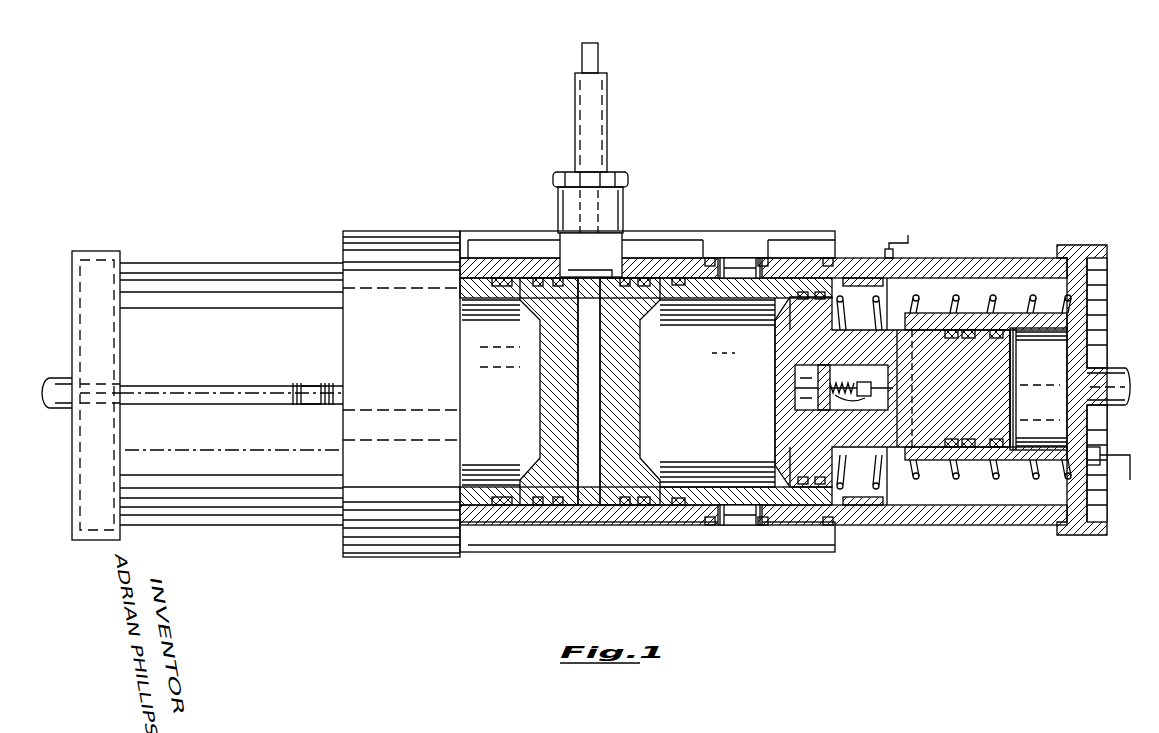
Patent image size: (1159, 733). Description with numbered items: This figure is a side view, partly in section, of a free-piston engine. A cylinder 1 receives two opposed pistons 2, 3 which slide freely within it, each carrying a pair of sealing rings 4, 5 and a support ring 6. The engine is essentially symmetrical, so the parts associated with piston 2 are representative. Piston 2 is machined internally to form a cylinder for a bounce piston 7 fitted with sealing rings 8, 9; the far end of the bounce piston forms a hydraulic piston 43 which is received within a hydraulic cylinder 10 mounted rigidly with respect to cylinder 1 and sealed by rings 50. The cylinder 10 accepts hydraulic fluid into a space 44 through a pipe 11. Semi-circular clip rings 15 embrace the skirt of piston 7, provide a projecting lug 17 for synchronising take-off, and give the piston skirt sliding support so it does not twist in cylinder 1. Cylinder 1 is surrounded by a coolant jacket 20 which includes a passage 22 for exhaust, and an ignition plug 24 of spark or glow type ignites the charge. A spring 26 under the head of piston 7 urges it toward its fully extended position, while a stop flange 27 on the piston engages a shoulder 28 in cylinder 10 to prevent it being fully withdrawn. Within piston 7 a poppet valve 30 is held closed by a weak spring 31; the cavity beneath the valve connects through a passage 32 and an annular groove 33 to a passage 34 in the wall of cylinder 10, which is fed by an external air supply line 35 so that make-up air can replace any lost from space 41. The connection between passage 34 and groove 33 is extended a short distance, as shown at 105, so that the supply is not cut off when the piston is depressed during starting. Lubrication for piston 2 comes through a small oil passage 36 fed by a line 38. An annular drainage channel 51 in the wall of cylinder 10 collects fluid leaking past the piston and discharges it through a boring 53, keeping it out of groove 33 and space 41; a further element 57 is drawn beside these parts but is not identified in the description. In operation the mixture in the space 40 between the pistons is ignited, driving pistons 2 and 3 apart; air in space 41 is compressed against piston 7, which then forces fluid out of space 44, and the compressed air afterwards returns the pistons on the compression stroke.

The cylinder 1 is at (677, 264).
The piston 2 is at (640, 380).
The piston 3 is at (540, 381).
The sealing ring 4 is at (558, 505).
The sealing ring 5 is at (538, 505).
The support ring 6 is at (678, 506).
The bounce piston 7 is at (780, 338).
The sealing ring 8 is at (803, 291).
The sealing ring 9 is at (822, 291).
The hydraulic cylinder 10 is at (1005, 311).
The pipe 11 is at (49, 378).
The semi-circular clip rings 15 is at (324, 386).
The projecting lug 17 is at (309, 405).
The coolant jacket 20 is at (729, 236).
The passage 22 is at (755, 238).
The ignition plug 24 is at (620, 210).
The spring 26 is at (918, 302).
The stop flange 27 is at (1032, 328).
The shoulder 28 is at (1013, 325).
The poppet valve 30 is at (778, 397).
The spring 31 is at (861, 391).
The passage 32 is at (900, 385).
The annular groove 33 is at (918, 388).
The passage 34 is at (1040, 461).
The external air supply line 35 is at (1116, 453).
The oil passage 36 is at (857, 276).
The line 38 is at (908, 235).
The space 40 is at (586, 326).
The space 41 is at (470, 386).
The hydraulic piston 43 is at (1003, 388).
The space 44 is at (1039, 390).
The rings 50 is at (970, 311).
The annular drainage channel 51 is at (942, 340).
The boring 53 is at (935, 470).
The pin 57 is at (954, 311).
The extended connection point 105 is at (908, 462).